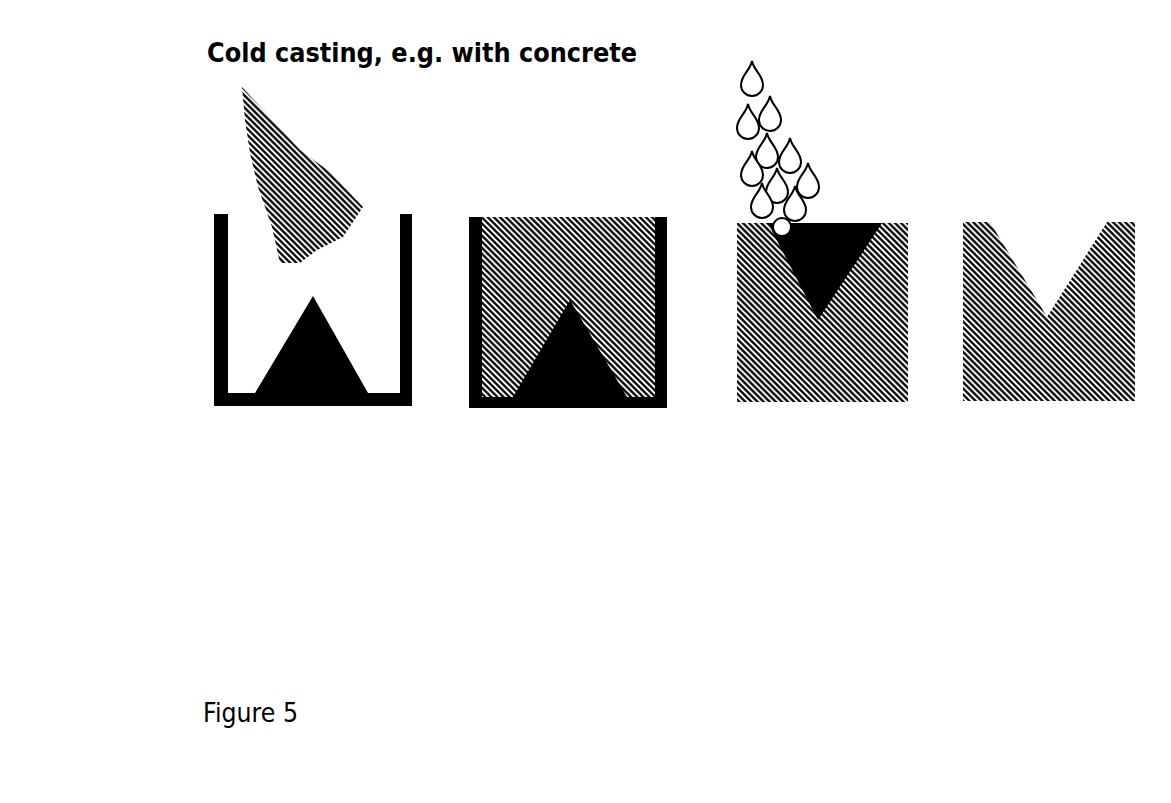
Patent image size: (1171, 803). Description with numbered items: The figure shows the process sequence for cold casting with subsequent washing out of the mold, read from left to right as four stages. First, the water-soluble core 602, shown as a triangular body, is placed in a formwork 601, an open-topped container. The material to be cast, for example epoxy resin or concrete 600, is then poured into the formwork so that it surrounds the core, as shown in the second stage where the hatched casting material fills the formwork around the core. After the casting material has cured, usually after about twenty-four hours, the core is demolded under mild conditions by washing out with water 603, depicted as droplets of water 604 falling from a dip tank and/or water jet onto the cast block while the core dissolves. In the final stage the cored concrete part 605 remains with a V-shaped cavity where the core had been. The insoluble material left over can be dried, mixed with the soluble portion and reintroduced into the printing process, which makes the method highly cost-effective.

The concrete 600 is at (522, 232).
The formwork 601 is at (302, 403).
The water-soluble core 602 is at (365, 405).
The washing out with water 603 is at (808, 318).
The water 604 is at (825, 170).
The cored concrete part 605 is at (1017, 382).